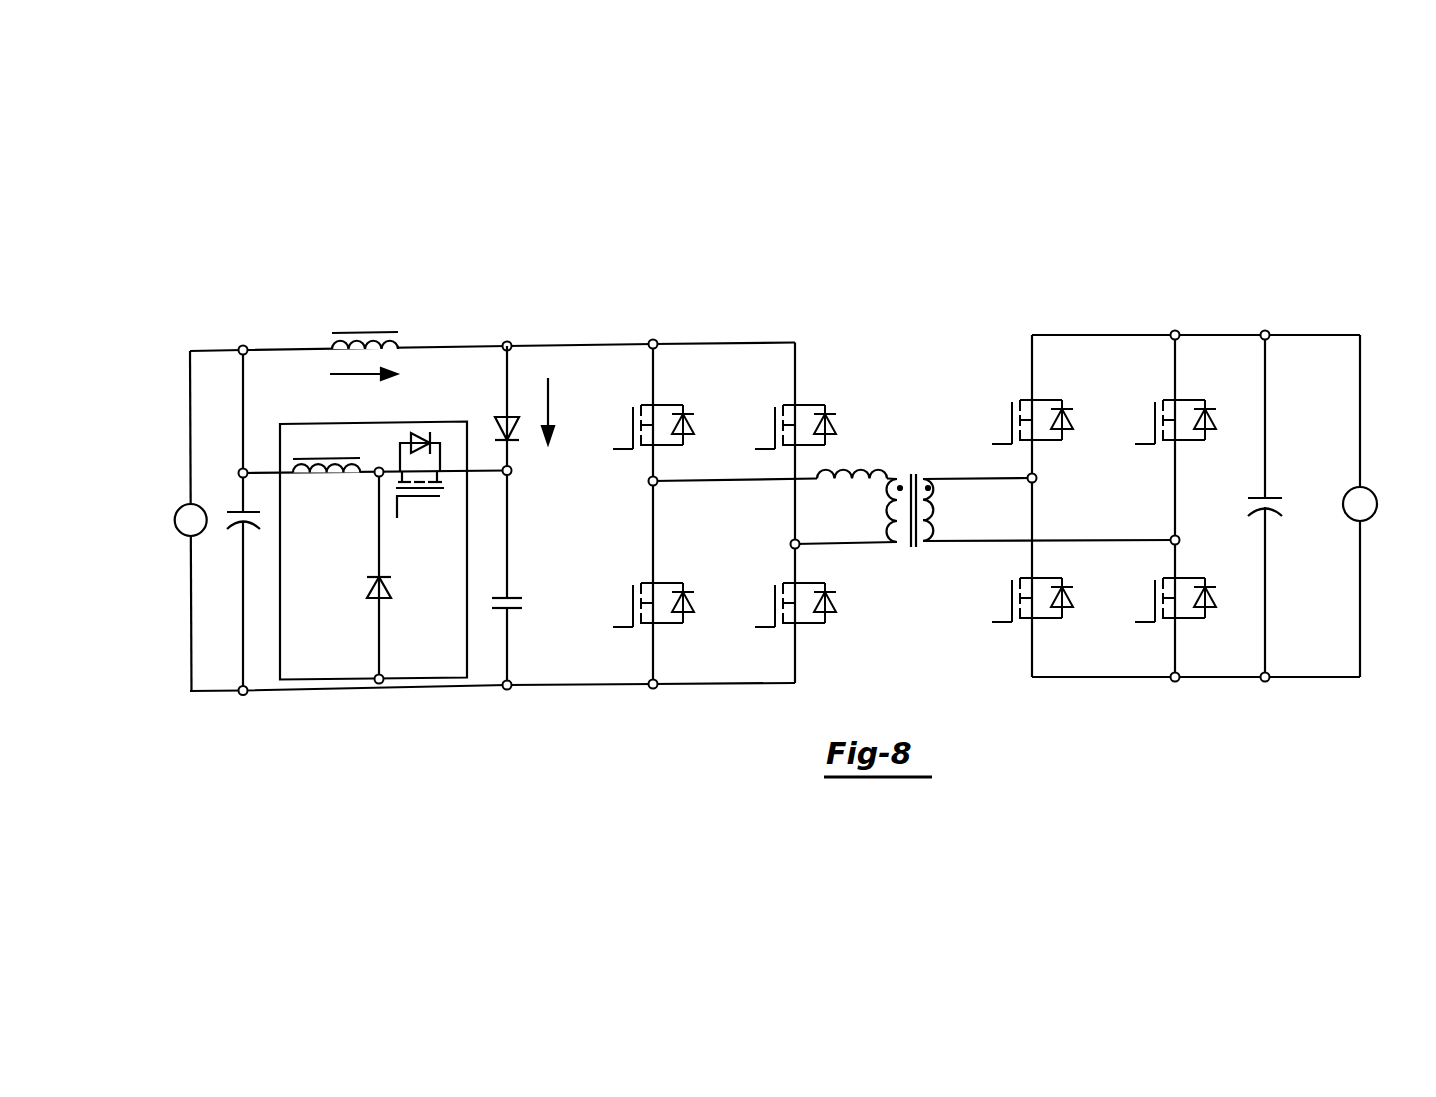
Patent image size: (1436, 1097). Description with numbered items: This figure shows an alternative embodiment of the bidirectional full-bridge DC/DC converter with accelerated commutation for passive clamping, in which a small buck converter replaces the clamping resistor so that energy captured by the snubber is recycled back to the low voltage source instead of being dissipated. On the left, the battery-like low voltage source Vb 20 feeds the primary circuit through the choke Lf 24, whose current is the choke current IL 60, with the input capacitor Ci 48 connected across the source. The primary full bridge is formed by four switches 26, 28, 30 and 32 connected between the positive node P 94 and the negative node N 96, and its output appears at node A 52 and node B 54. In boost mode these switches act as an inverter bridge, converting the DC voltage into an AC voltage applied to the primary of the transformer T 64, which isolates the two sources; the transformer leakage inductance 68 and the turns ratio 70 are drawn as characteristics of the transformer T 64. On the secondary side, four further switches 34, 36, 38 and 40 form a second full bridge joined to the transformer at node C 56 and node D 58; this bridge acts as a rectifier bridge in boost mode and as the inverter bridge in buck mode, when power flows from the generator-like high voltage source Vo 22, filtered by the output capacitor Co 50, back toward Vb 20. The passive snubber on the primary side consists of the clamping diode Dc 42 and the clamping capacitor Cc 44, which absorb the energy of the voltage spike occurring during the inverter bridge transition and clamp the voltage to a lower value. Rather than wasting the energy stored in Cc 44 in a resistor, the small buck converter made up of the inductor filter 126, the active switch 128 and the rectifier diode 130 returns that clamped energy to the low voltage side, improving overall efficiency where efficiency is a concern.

The low voltage source Vb 20 is at (152, 482).
The high voltage source Vo 22 is at (1412, 435).
The choke Lf 24 is at (315, 340).
The switch S1 26 is at (610, 410).
The switch S2 28 is at (758, 627).
The switch S3 30 is at (618, 627).
The switch S4 32 is at (760, 405).
The switch S5 34 is at (1000, 410).
The switch S6 36 is at (1130, 620).
The switch S7 38 is at (990, 620).
The switch S8 40 is at (1140, 410).
The clamping diode Dc 42 is at (482, 359).
The clamping capacitor Cc 44 is at (478, 580).
The input capacitor Ci 48 is at (263, 560).
The output capacitor Co 50 is at (1313, 528).
The node A 52 is at (626, 485).
The node B 54 is at (778, 549).
The node C 56 is at (1066, 483).
The node D 58 is at (1205, 548).
The choke current IL 60 is at (350, 396).
The transformer T 64 is at (918, 425).
The transformer leakage inductance Llk 68 is at (870, 425).
The ratio of transformer wire turns 70 is at (910, 600).
The positive node P 94 is at (505, 296).
The negative node N 96 is at (518, 733).
The inductor filter Lcb 126 is at (312, 520).
The active switch Scb 128 is at (420, 602).
The rectifier diode Dcb 130 is at (433, 510).